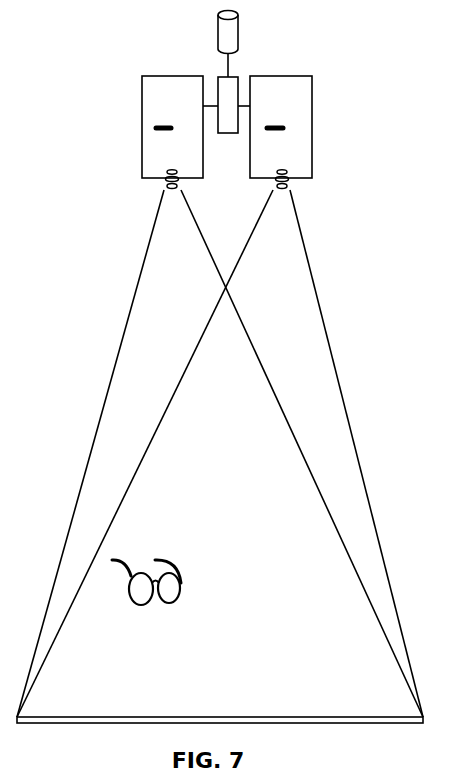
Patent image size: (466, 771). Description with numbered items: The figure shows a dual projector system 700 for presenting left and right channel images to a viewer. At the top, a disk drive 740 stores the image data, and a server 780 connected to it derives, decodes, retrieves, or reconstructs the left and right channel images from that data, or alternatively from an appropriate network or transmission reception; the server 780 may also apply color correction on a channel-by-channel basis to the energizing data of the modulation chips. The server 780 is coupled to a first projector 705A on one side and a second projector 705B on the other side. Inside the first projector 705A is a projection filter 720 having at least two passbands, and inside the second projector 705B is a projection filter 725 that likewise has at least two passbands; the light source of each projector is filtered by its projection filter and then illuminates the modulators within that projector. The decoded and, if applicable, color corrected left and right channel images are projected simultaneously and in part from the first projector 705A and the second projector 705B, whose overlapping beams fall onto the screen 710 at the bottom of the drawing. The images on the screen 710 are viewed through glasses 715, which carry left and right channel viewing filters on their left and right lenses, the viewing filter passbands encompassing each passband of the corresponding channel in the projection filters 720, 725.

The dual projector system 700 is at (61, 187).
The first projector 705A is at (170, 162).
The second projector 705B is at (304, 162).
The screen 710 is at (320, 717).
The glasses 715 is at (128, 597).
The projection filter 720 is at (155, 128).
The projection filter 725 is at (266, 128).
The disk drive 740 is at (219, 44).
The server 780 is at (240, 150).